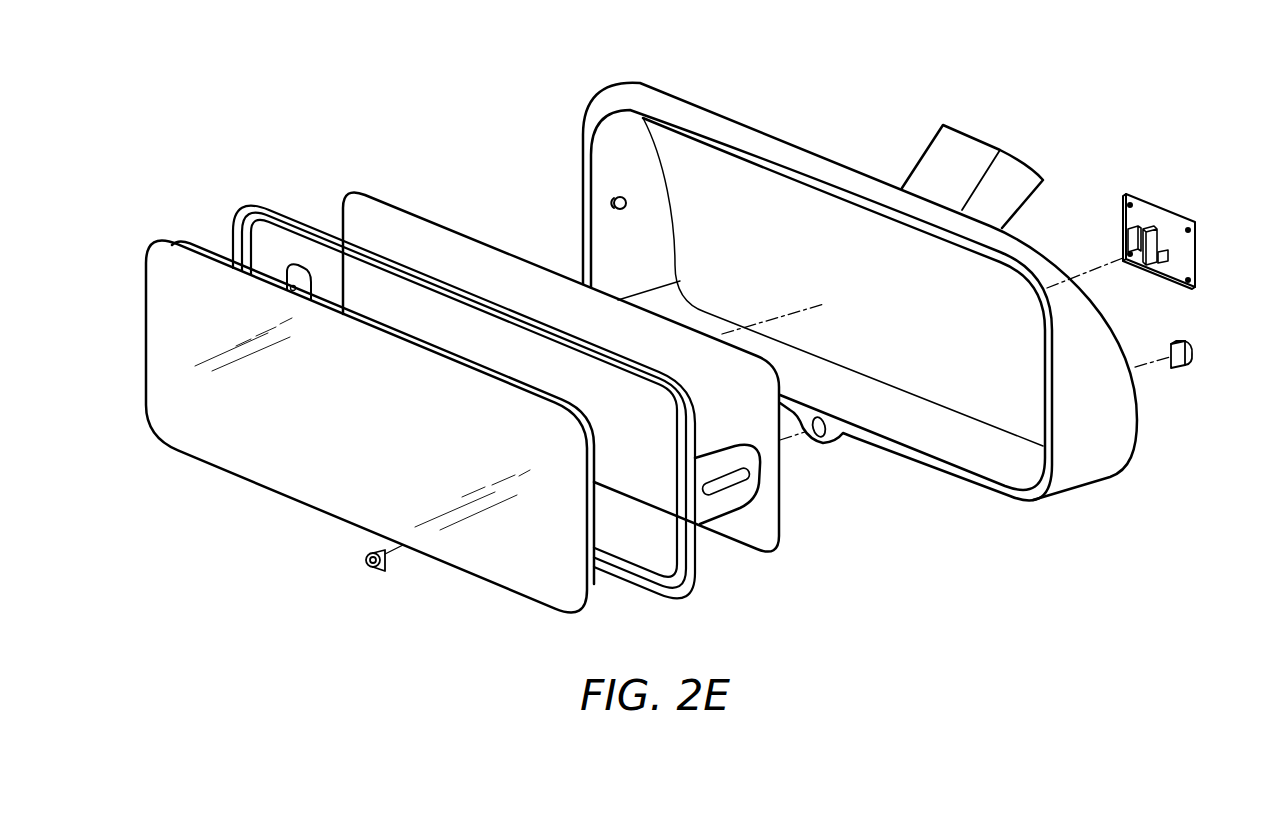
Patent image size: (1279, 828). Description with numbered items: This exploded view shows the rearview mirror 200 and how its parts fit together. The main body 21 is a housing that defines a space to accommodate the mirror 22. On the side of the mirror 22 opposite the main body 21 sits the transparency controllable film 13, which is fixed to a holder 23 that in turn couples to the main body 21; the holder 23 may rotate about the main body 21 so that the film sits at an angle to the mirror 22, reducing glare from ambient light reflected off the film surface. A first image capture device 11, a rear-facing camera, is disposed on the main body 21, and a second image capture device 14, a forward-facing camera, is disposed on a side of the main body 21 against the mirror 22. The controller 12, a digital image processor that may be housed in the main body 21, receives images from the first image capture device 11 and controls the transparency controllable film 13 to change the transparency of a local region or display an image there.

The rearview mirror 200 is at (118, 58).
The first image capture device 11 is at (363, 562).
The controller 12 is at (1143, 227).
The transparency controllable film 13 is at (158, 362).
The second image capture device 14 is at (1193, 353).
The main body 21 is at (1113, 450).
The mirror 22 is at (770, 522).
The holder 23 is at (687, 578).